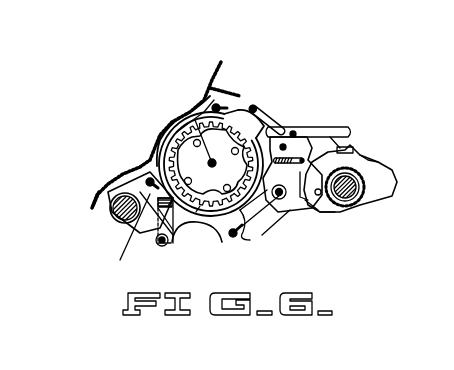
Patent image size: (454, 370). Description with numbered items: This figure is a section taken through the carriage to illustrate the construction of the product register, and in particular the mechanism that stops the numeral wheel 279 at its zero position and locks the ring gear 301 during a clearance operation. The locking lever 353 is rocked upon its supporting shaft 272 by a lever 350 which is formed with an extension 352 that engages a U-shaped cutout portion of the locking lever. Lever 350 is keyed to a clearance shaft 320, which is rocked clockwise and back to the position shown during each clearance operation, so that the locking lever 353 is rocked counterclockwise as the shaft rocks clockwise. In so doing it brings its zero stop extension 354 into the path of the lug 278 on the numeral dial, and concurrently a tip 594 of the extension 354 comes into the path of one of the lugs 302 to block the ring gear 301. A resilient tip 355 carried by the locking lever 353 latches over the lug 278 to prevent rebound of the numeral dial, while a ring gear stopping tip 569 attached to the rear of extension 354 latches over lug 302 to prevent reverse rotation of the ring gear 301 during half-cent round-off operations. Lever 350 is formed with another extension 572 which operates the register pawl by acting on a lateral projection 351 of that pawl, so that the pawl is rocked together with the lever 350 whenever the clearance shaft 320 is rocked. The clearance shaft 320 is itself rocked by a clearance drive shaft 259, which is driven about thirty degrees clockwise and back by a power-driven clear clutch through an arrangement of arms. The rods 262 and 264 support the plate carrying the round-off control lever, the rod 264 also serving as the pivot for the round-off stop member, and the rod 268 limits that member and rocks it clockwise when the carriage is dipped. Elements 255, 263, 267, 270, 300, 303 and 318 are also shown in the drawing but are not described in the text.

The link 255 is at (203, 101).
The clearance drive shaft 259 is at (112, 219).
The rod 262 is at (162, 247).
The cable end 263 is at (93, 197).
The rod 264 is at (123, 171).
The pin 267 is at (220, 104).
The rod 268 is at (220, 62).
The plate 270 is at (181, 116).
The supporting shaft 272 is at (279, 200).
The lug 278 is at (247, 110).
The numeral wheel 279 is at (141, 227).
The support 300 is at (198, 206).
The ring gear 301 is at (158, 222).
The lug 302 is at (152, 150).
The body plate 303 is at (254, 214).
The outer ring 318 is at (159, 133).
The clearance shaft 320 is at (364, 202).
The lever 350 is at (384, 198).
The lateral projection 351 is at (349, 152).
The extension 352 is at (314, 210).
The locking lever 353 is at (325, 214).
The zero stop extension 354 is at (324, 128).
The resilient tip 355 is at (257, 106).
The ring gear stopping tip 569 is at (272, 122).
The extension 572 is at (378, 166).
The tip 594 is at (299, 140).